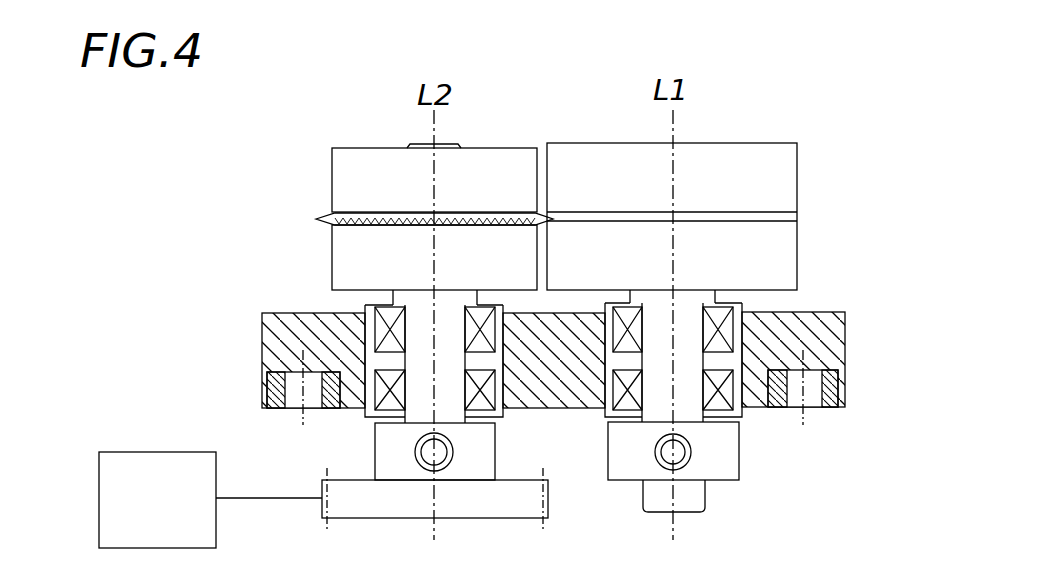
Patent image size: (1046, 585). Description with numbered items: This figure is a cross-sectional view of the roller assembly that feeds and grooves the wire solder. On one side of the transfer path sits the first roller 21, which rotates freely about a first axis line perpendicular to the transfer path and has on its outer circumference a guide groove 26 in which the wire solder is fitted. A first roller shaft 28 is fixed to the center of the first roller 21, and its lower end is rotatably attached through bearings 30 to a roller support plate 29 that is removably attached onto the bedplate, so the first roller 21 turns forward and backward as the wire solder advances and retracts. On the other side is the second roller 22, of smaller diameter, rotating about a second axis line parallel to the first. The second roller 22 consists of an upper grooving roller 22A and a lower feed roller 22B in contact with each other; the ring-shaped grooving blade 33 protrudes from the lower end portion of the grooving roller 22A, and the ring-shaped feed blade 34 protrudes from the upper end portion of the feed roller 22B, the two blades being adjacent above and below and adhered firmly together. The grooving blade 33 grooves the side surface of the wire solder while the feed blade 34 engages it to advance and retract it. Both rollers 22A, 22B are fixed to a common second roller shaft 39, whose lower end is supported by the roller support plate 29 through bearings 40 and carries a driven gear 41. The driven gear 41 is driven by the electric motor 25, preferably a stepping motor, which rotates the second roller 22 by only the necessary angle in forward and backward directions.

The first roller 21 is at (718, 178).
The second roller 22 is at (383, 180).
The grooving roller 22A is at (372, 175).
The feed roller 22B is at (357, 277).
The electric motor 25 is at (121, 472).
The guide groove 26 is at (797, 214).
The first roller shaft 28 is at (685, 377).
The roller support plate 29 is at (283, 360).
The bearings 30 is at (724, 308).
The grooving blade 33 is at (327, 214).
The feed blade 34 is at (322, 224).
The second roller shaft 39 is at (425, 400).
The bearings 40 is at (382, 332).
The driven gear 41 is at (480, 492).